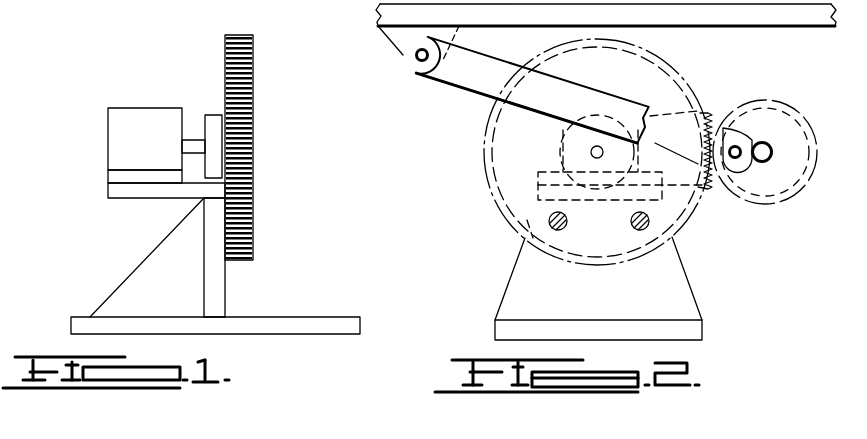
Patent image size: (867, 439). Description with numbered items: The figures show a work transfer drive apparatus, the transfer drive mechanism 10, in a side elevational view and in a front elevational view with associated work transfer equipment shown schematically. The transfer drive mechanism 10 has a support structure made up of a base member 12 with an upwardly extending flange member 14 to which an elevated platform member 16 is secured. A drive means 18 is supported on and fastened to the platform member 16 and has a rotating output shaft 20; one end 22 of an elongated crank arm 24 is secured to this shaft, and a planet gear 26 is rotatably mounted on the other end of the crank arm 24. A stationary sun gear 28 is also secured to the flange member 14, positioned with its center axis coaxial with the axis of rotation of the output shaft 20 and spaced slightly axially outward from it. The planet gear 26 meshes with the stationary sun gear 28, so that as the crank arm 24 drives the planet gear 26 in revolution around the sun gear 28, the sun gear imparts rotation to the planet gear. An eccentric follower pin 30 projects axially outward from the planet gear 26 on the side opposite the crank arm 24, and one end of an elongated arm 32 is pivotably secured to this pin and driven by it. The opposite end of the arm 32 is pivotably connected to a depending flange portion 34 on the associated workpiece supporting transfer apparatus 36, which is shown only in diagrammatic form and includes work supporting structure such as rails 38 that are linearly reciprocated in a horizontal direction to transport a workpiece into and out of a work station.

In FIG. 1, the transfer drive mechanism 10 is at (112, 239).
In FIG. 2, the transfer drive mechanism 10 is at (496, 262).
In FIG. 1, the base member 12 is at (215, 341).
In FIG. 1, the flange member 14 is at (222, 287).
In FIG. 1, the platform member 16 is at (166, 207).
In FIG. 1, the drive means 18 is at (154, 145).
In FIG. 1, the output shaft 20 is at (190, 140).
In FIG. 1, the end of crank arm 22 is at (211, 118).
In FIG. 2, the crank arm 24 is at (716, 107).
In FIG. 2, the planet gear 26 is at (779, 164).
In FIG. 1, the sun gear 28 is at (253, 219).
In FIG. 2, the sun gear 28 is at (485, 180).
In FIG. 2, the eccentric follower pin 30 is at (738, 162).
In FIG. 2, the arm 32 is at (462, 78).
In FIG. 2, the depending flange portion 34 is at (396, 38).
In FIG. 2, the transfer apparatus 36 is at (371, 25).
In FIG. 2, the rails 38 is at (607, 38).